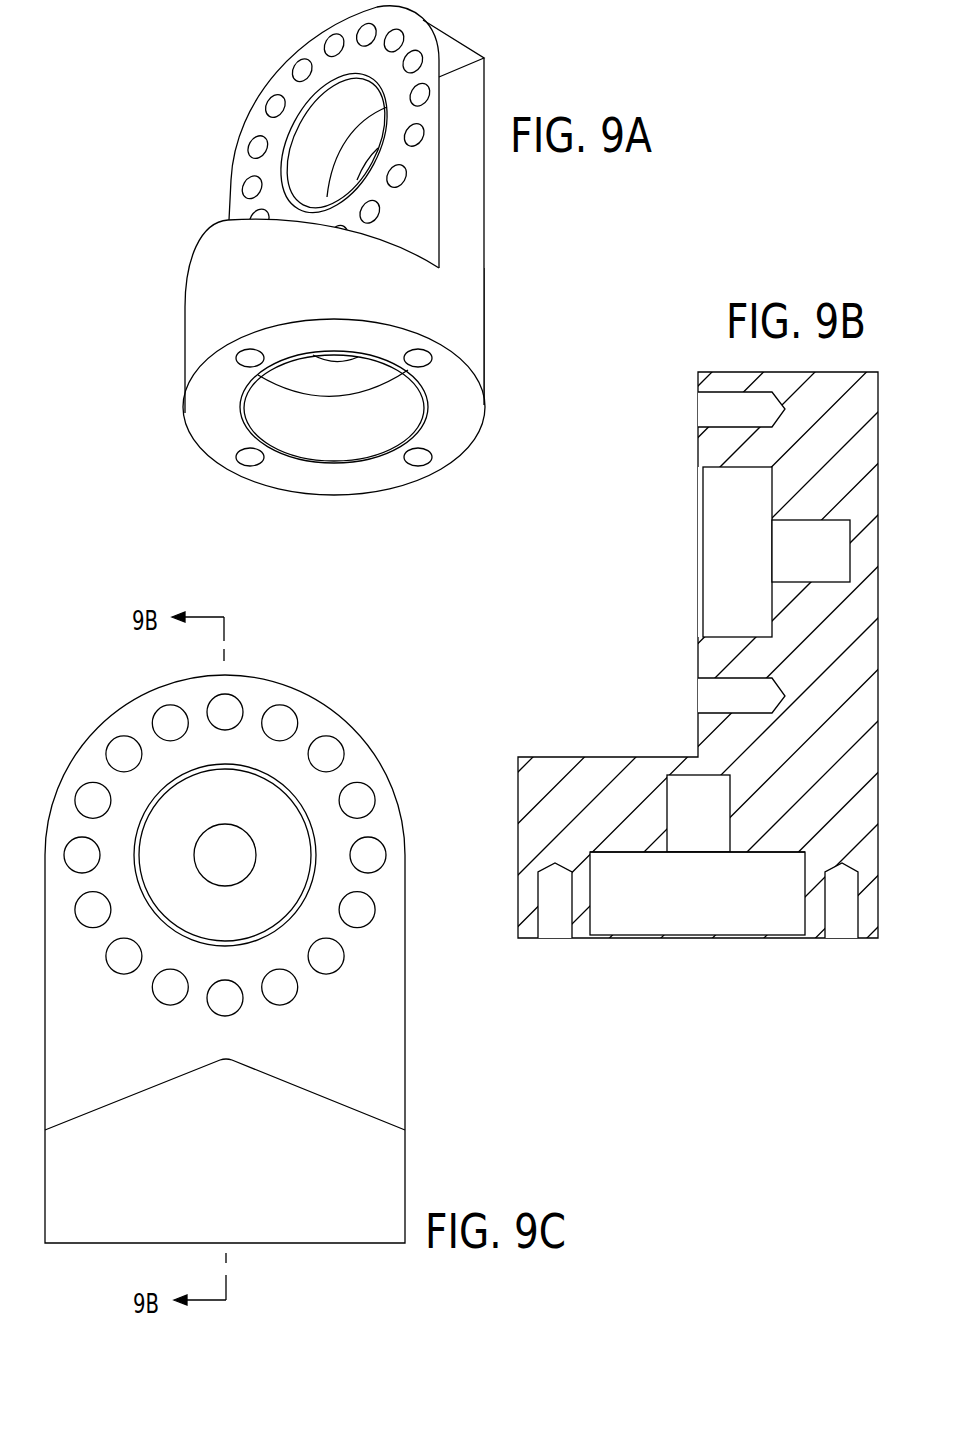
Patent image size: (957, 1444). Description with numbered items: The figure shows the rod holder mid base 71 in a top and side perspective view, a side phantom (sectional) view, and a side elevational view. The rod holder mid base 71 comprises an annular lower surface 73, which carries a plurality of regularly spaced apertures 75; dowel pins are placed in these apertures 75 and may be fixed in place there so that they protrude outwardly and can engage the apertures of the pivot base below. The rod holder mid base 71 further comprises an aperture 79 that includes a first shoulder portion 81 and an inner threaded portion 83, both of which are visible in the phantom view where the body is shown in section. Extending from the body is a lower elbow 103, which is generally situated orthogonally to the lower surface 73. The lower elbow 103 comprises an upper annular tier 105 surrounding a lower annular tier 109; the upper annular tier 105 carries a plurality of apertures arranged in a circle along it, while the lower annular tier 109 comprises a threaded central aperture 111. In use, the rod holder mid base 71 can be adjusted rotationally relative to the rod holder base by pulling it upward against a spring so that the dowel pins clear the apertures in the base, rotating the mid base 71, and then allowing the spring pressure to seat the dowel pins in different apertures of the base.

In FIG. 9A, the rod holder mid base 71 is at (186, 336).
In FIG. 9B, the rod holder mid base 71 is at (748, 912).
In FIG. 9A, the annular lower surface 73 is at (453, 430).
In FIG. 9B, the apertures 75 is at (550, 915).
In FIG. 9B, the aperture 79 is at (647, 912).
In FIG. 9B, the first shoulder portion 81 is at (627, 853).
In FIG. 9B, the inner threaded portion 83 is at (700, 776).
In FIG. 9C, the lower elbow 103 is at (378, 1018).
In FIG. 9C, the upper annular tier 105 is at (387, 817).
In FIG. 9C, the lower annular tier 109 is at (258, 813).
In FIG. 9C, the threaded central aperture 111 is at (223, 840).